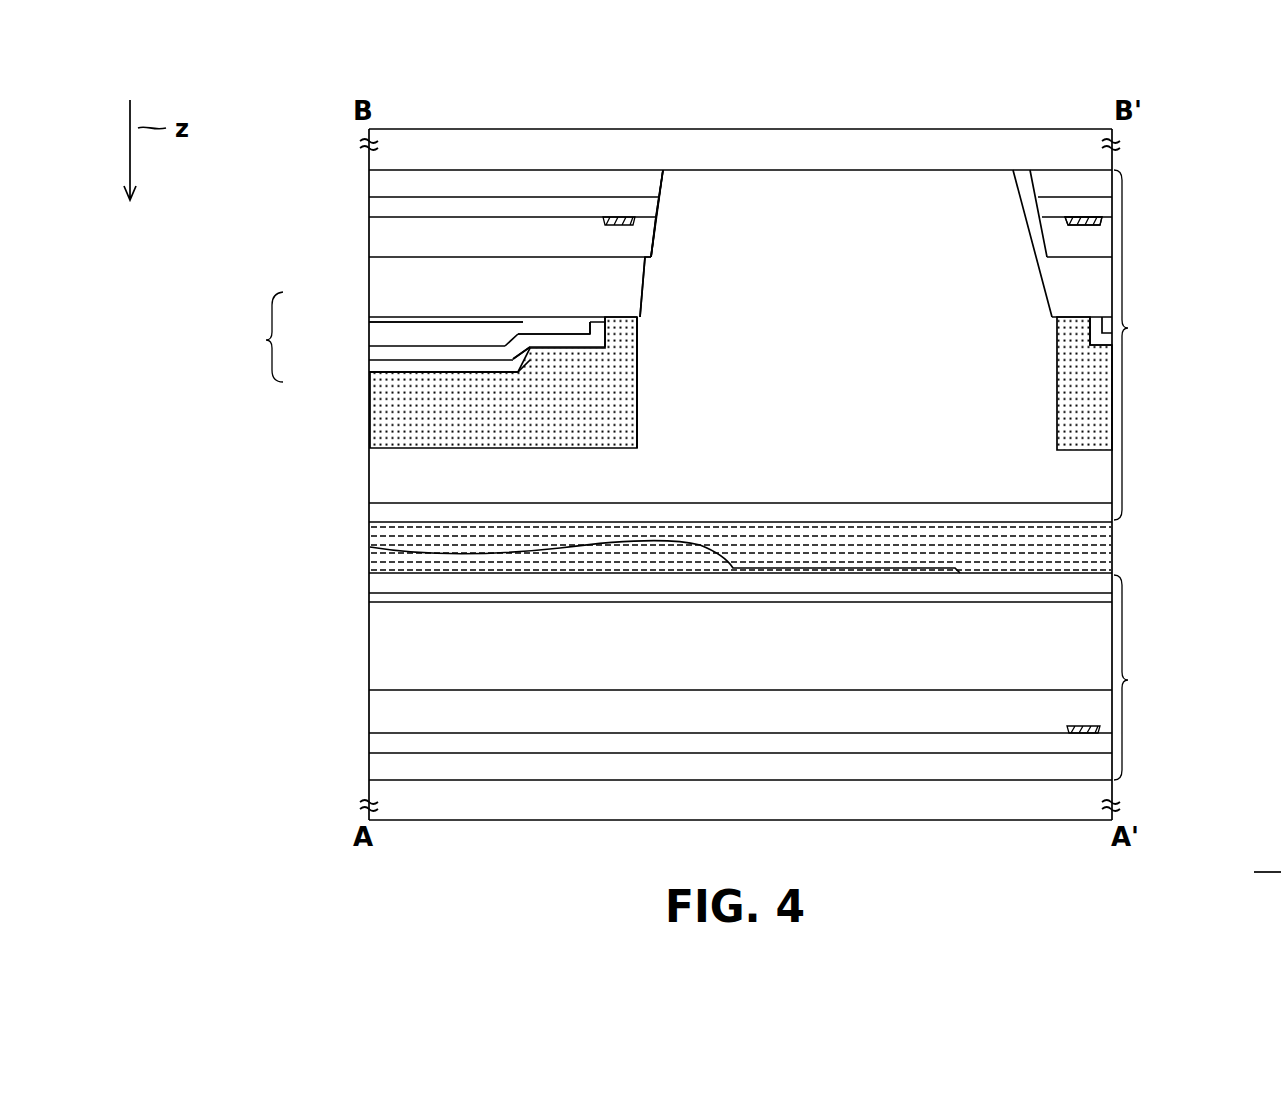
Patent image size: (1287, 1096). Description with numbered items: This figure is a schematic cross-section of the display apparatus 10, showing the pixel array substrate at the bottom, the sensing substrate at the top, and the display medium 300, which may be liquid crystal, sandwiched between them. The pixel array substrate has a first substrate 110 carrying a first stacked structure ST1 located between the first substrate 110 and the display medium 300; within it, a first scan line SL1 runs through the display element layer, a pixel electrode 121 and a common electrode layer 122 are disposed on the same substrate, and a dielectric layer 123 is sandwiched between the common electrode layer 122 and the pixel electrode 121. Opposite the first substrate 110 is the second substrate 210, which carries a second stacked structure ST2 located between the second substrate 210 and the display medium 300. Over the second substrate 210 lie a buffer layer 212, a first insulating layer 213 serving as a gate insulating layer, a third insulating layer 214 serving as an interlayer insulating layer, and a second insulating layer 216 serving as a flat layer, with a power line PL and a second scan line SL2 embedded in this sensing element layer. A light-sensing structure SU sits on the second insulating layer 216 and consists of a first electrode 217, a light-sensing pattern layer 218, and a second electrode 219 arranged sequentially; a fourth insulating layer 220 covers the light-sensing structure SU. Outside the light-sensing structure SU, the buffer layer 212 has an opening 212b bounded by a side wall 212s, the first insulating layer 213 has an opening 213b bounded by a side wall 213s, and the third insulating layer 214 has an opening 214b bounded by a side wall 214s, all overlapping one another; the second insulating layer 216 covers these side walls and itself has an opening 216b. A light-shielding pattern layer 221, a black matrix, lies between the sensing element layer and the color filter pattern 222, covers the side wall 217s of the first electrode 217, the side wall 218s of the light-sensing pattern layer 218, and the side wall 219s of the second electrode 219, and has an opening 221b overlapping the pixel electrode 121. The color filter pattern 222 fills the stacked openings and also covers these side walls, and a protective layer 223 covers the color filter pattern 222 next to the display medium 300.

The display apparatus 10 is at (1267, 860).
The first substrate 110 is at (1104, 790).
The pixel electrode 121 is at (370, 547).
The common electrode layer 122 is at (372, 597).
The dielectric layer 123 is at (372, 588).
The second substrate 210 is at (1114, 161).
The buffer layer 212 is at (370, 182).
The first insulating layer 213 is at (370, 206).
The third insulating layer 214 is at (370, 238).
The second insulating layer 216 is at (370, 274).
The first electrode 217 is at (370, 323).
The light-sensing pattern layer 218 is at (370, 335).
The second electrode 219 is at (370, 353).
The fourth insulating layer 220 is at (370, 373).
The light-shielding pattern layer 221 is at (386, 426).
The color filter pattern 222 is at (386, 468).
The protective layer 223 is at (370, 505).
The display medium 300 is at (1114, 548).
The side wall of first electrode 217s is at (516, 322).
The side wall of light-sensing pattern layer 218s is at (592, 322).
The side wall of second electrode 219s is at (524, 351).
The opening of buffer layer 212b is at (665, 182).
The side wall of buffer layer 212s is at (661, 183).
The opening of first insulating layer 213b is at (663, 208).
The side wall of first insulating layer 213s is at (657, 207).
The opening of third insulating layer 214b is at (653, 238).
The side wall of third insulating layer 214s is at (653, 237).
The opening of second insulating layer 216b is at (651, 285).
The opening of light-shielding pattern layer 221b is at (639, 387).
The power line PL is at (622, 217).
The first scan line SL1 is at (1083, 726).
The second scan line SL2 is at (1085, 217).
The first stacked structure ST1 is at (767, 677).
The second stacked structure ST2 is at (1140, 345).
The light-sensing structure SU is at (259, 337).